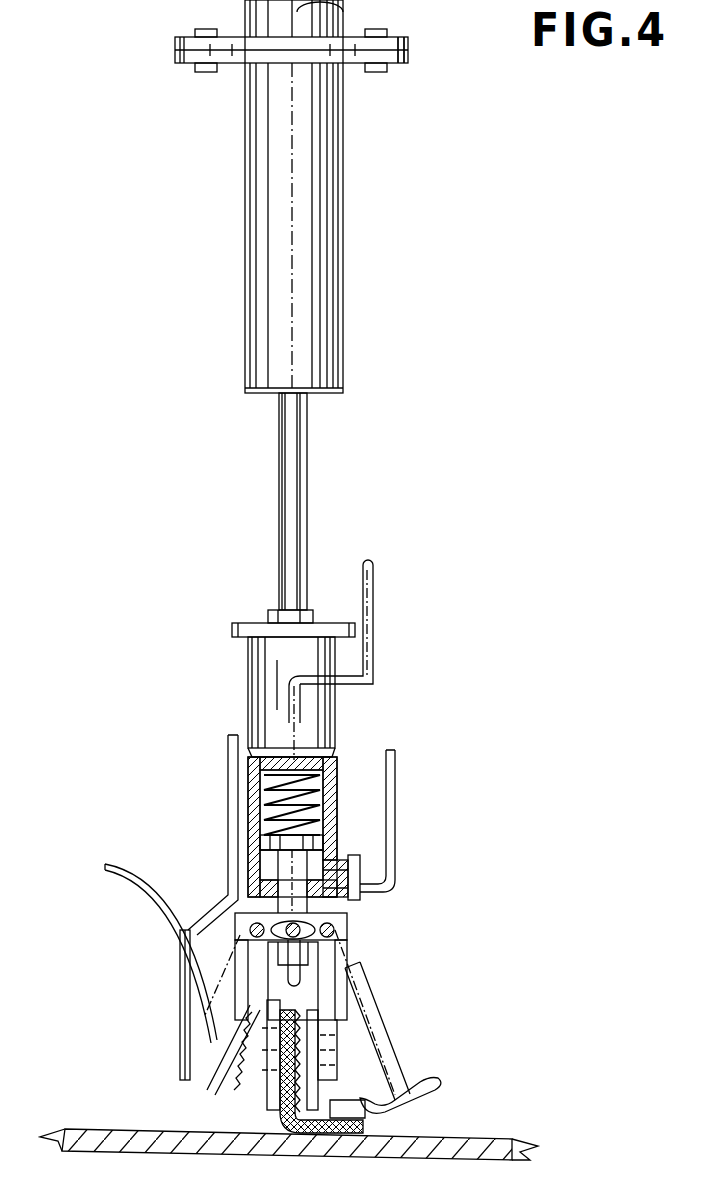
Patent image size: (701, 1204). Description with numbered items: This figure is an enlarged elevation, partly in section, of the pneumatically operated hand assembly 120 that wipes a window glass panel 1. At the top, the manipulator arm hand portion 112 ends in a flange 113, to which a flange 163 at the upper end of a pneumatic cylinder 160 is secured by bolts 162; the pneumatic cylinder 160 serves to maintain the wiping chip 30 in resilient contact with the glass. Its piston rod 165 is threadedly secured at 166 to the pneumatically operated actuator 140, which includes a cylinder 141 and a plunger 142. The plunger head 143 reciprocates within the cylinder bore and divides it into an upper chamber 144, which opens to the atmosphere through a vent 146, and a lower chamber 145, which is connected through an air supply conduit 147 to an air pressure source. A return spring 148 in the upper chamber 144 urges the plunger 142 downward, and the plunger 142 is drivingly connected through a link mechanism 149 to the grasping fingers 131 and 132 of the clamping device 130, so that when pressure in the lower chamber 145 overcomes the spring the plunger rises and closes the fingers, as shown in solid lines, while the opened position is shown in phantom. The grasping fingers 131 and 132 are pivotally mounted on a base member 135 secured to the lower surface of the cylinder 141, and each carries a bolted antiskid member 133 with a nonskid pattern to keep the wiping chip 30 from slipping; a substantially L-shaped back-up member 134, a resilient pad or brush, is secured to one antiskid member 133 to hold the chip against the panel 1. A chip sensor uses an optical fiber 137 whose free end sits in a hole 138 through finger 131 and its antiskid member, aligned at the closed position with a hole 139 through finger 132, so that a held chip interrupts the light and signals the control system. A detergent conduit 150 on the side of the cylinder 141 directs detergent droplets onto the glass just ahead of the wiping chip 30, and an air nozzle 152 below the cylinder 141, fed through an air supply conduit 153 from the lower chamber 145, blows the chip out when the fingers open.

The window glass panel 1 is at (478, 1140).
The wiping chip 30 is at (290, 1127).
The manipulator arm hand portion 112 is at (347, 19).
The flange 113 is at (188, 40).
The hand assembly 120 is at (520, 469).
The clamping device 130 is at (438, 938).
The grasping finger 131 is at (256, 988).
The grasping finger 132 is at (330, 1002).
The antiskid member 133 is at (352, 1097).
The back-up member 134 is at (355, 1118).
The base member 135 is at (348, 935).
The optical fiber 137 is at (133, 878).
The hole 138 is at (325, 1080).
The hole 139 is at (350, 1045).
The pneumatically operated actuator 140 is at (338, 759).
The cylinder 141 is at (330, 840).
The plunger 142 is at (282, 886).
The plunger head 143 is at (263, 842).
The upper chamber 144 is at (328, 775).
The lower chamber 145 is at (265, 856).
The vent 146 is at (248, 790).
The air supply conduit 147 is at (395, 816).
The return spring 148 is at (310, 803).
The link mechanism 149 is at (350, 903).
The detergent conduit 150 is at (180, 995).
The air nozzle 152 is at (330, 972).
The air supply conduit 153 is at (372, 648).
The pneumatic cylinder 160 is at (345, 254).
The bolt 162 is at (378, 73).
The flange 163 is at (398, 72).
The piston rod 165 is at (306, 493).
The threaded connection 166 is at (274, 610).